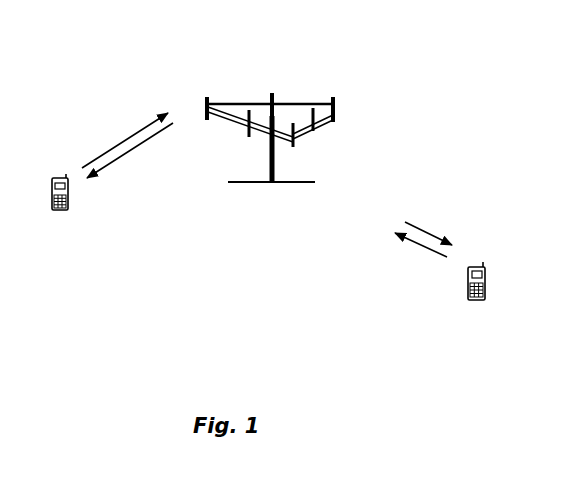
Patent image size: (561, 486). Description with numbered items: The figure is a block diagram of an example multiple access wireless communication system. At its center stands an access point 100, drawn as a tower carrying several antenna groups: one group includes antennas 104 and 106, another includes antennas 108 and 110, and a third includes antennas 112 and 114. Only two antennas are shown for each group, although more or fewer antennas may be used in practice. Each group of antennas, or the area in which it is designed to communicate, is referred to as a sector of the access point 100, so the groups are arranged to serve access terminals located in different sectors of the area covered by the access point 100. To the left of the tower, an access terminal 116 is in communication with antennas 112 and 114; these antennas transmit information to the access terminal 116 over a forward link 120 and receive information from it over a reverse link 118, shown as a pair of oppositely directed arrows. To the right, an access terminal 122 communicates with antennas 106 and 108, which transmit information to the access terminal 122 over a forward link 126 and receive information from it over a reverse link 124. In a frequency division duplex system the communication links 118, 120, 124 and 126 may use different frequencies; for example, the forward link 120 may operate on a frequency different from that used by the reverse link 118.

The access point 100 is at (261, 183).
The antenna 104 is at (295, 146).
The antenna 106 is at (317, 132).
The antenna 108 is at (336, 116).
The antenna 110 is at (272, 95).
The antenna 112 is at (208, 103).
The antenna 114 is at (248, 137).
The access terminal 116 is at (64, 178).
The reverse link 118 is at (126, 141).
The forward link 120 is at (136, 149).
The access terminal 122 is at (477, 265).
The reverse link 124 is at (411, 239).
The forward link 126 is at (432, 233).